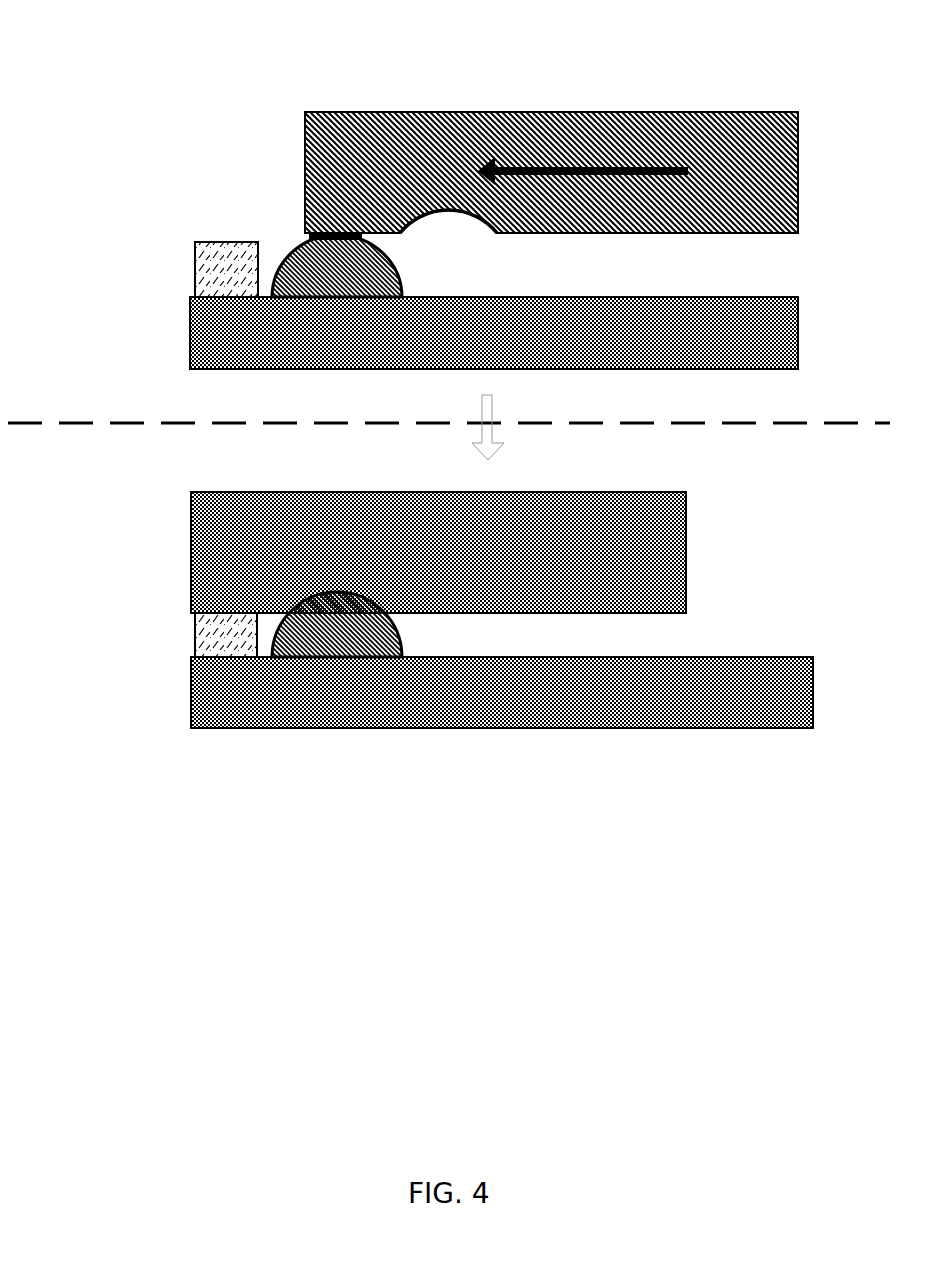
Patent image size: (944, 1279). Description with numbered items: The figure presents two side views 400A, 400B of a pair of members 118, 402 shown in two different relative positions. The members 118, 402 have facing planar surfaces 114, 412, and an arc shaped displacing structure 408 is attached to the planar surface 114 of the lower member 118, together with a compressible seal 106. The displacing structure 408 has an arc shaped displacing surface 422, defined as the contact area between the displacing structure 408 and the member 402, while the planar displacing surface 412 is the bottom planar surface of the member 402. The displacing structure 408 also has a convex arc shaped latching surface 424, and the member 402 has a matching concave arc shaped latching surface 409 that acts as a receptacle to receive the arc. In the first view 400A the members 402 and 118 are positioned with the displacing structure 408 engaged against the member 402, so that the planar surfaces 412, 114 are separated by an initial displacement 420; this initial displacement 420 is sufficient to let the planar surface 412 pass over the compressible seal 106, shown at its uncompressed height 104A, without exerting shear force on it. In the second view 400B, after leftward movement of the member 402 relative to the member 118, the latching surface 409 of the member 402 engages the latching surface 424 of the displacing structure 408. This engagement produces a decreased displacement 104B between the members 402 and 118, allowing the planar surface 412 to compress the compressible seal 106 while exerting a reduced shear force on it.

The first side view 400A is at (121, 79).
The second side view 400B is at (121, 500).
The member 402 is at (541, 221).
The concave arc shaped latching surface 409 is at (436, 215).
The planar displacing surface 412 is at (662, 235).
The initial displacement 420 is at (813, 233).
The arc shaped displacing surface 422 is at (322, 230).
The convex arc shaped latching surface 424 is at (390, 600).
The planar surface 114 is at (690, 297).
The member 118 is at (482, 359).
The displacement 104A is at (156, 242).
The decreased displacement 104B is at (178, 613).
The compressible seal 106 is at (213, 282).
The arc shaped displacing structure 408 is at (322, 282).